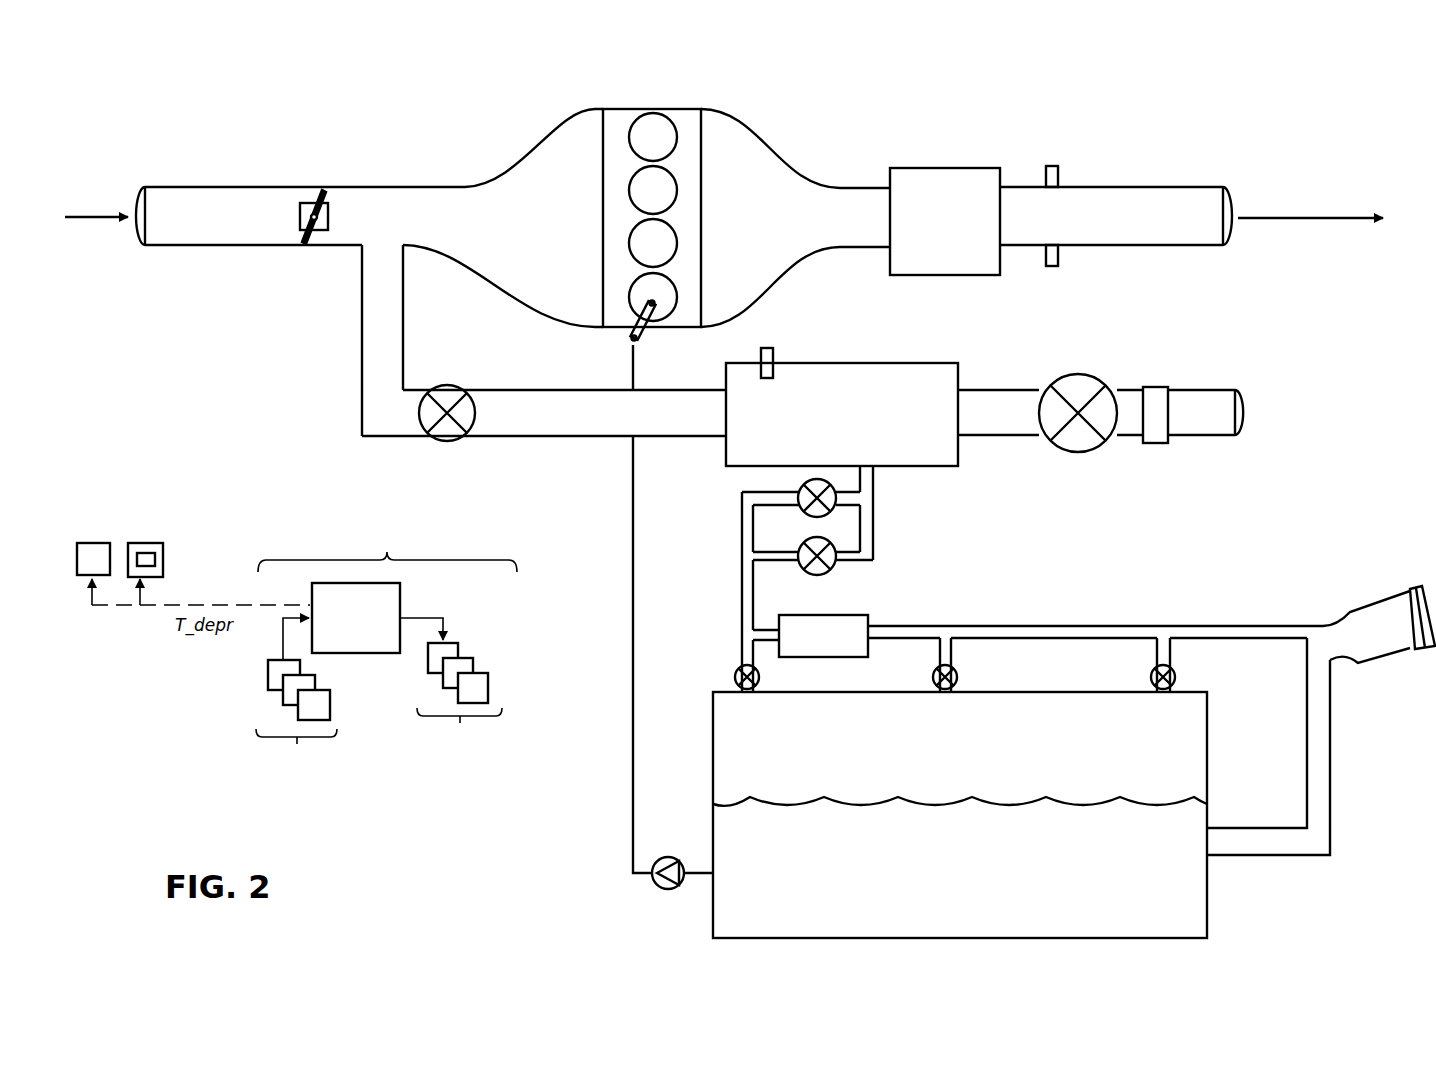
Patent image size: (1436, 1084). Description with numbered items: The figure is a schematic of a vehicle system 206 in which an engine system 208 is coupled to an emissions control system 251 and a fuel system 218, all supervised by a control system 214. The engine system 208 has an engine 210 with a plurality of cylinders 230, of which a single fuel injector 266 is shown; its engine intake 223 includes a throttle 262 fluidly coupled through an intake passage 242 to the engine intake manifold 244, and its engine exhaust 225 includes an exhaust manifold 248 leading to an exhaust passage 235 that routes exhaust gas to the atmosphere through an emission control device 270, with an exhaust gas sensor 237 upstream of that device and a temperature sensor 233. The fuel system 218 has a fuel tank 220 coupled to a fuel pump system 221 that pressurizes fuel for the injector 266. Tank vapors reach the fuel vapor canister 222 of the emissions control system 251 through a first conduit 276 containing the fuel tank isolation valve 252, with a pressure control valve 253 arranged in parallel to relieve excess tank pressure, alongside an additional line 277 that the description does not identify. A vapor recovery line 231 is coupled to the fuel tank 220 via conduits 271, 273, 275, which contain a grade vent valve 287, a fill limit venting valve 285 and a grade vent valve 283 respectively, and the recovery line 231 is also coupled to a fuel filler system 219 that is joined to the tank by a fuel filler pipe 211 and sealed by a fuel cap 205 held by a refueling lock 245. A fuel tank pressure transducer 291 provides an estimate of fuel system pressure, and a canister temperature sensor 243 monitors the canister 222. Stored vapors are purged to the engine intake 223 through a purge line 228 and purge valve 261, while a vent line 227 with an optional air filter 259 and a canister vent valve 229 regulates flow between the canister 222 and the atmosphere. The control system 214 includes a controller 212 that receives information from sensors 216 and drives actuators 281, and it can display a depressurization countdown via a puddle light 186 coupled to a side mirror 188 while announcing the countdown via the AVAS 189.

The vehicle system 206 is at (160, 126).
The engine intake 223 is at (527, 138).
The intake passage 242 is at (350, 247).
The throttle 262 is at (328, 222).
The engine intake manifold 244 is at (503, 218).
The engine 210 is at (703, 197).
The cylinders 230 is at (653, 217).
The fuel injector 266 is at (650, 328).
The exhaust manifold 248 is at (795, 218).
The engine exhaust 225 is at (879, 121).
The engine system 208 is at (1020, 116).
The emission control device 270 is at (932, 168).
The exhaust gas sensor 237 is at (1045, 178).
The temperature sensor 233 is at (1045, 256).
The exhaust passage 235 is at (1173, 187).
The emissions control system 251 is at (1245, 344).
The purge line 228 is at (544, 340).
The purge valve 261 is at (447, 386).
The fuel vapor canister 222 is at (959, 384).
The canister temperature sensor 243 is at (775, 347).
The vent line 227 is at (1100, 412).
The canister vent valve 229 is at (1080, 374).
The air filter 259 is at (1160, 387).
The conduit 277 is at (770, 491).
The pressure control valve 253 is at (805, 513).
The fuel tank isolation valve 252 is at (806, 572).
The first conduit 276 is at (873, 546).
The fuel tank pressure transducer 291 is at (869, 621).
The grade vent valve 287 is at (734, 677).
The conduit 271 is at (754, 647).
The vapor recovery line 231 is at (1228, 626).
The conduit 273 is at (937, 648).
The fill limit venting valve 285 is at (958, 678).
The conduit 275 is at (1155, 647).
The grade vent valve 283 is at (1175, 676).
The fuel filler pipe 211 is at (1332, 740).
The refueling lock 245 is at (1416, 651).
The fuel cap 205 is at (1417, 584).
The fuel filler system 219 is at (1385, 585).
The fuel tank 220 is at (1207, 795).
The fuel pump system 221 is at (667, 857).
The fuel system 218 is at (1258, 893).
The AVAS 189 is at (93, 543).
The puddle light 186 is at (140, 543).
The side mirror 188 is at (156, 560).
The control system 214 is at (386, 646).
The controller 212 is at (356, 618).
The sensors 216 is at (296, 701).
The actuators 281 is at (451, 691).